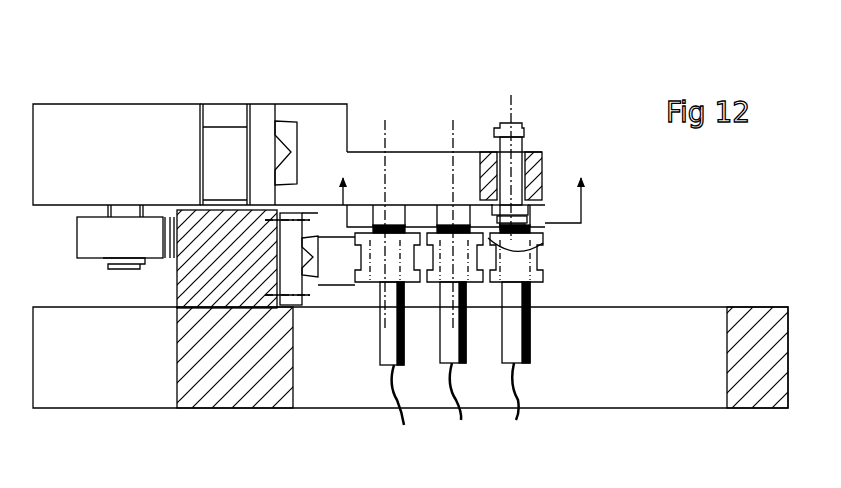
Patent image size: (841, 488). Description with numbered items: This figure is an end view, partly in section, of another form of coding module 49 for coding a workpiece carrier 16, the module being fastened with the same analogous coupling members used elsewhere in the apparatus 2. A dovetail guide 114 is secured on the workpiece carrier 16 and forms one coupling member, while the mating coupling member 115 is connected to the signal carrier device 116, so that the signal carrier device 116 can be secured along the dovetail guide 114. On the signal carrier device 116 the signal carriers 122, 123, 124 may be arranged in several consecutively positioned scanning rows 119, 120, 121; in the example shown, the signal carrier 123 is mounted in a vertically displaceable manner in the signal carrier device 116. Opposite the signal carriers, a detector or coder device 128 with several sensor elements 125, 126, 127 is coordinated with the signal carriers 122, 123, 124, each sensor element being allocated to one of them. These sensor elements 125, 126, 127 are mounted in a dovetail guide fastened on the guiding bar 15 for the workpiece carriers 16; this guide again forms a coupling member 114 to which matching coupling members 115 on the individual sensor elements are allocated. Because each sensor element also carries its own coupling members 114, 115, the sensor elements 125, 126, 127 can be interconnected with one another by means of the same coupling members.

The apparatus 2 is at (87, 38).
The guiding bar 15 is at (220, 295).
The workpiece carrier 16 is at (173, 122).
The coding module 49 is at (605, 265).
The dovetail guide 114 is at (279, 148).
The coupling member 115 is at (316, 115).
The signal carrier device 116 is at (400, 178).
The row 119 is at (384, 133).
The row 120 is at (453, 145).
The row 121 is at (513, 108).
The signal carrier 122 is at (543, 243).
The signal carrier 123 is at (540, 175).
The signal carrier 124 is at (395, 232).
The sensor element 125 is at (410, 380).
The sensor element 126 is at (452, 352).
The sensor element 127 is at (525, 360).
The detector or coder device 128 is at (535, 295).